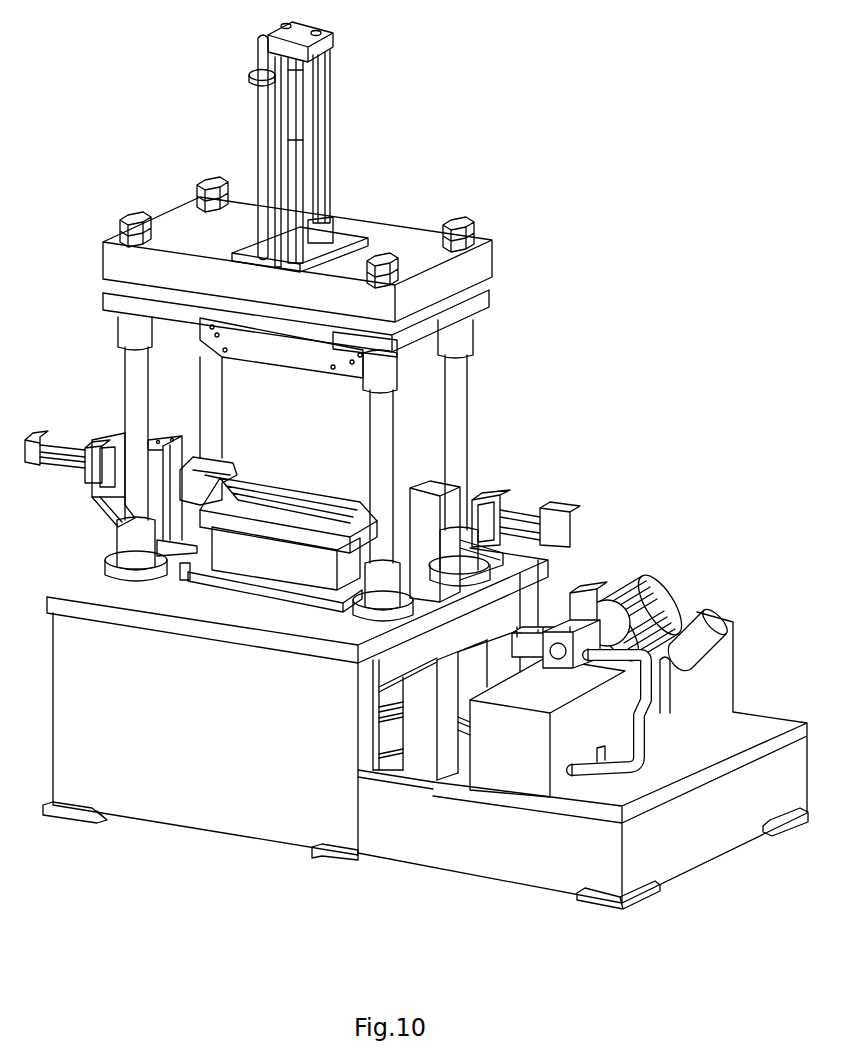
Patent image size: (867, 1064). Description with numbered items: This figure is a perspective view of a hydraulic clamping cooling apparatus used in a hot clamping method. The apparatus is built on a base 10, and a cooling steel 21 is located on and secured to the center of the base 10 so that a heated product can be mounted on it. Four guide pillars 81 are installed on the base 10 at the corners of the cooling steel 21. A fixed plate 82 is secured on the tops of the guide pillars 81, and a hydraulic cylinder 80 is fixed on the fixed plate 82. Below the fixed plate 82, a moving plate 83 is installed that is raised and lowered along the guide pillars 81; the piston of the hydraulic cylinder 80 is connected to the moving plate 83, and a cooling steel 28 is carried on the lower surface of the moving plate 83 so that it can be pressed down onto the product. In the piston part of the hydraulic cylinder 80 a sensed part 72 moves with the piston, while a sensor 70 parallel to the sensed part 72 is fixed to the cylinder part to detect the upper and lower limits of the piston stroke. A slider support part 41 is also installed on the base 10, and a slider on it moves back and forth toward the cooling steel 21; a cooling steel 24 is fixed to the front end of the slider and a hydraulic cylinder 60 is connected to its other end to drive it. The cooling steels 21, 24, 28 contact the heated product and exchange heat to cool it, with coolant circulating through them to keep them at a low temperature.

The base 10 is at (79, 592).
The cooling steel 21 is at (118, 515).
The cooling steel 24 is at (222, 453).
The cooling steel 28 is at (167, 347).
The slider support part 41 is at (445, 488).
The hydraulic cylinder 60 is at (565, 521).
The sensor 70 is at (300, 136).
The sensed part 72 is at (258, 103).
The hydraulic cylinder 80 is at (320, 79).
The guide pillars 81 is at (457, 393).
The fixed plate 82 is at (410, 238).
The moving plate 83 is at (490, 298).